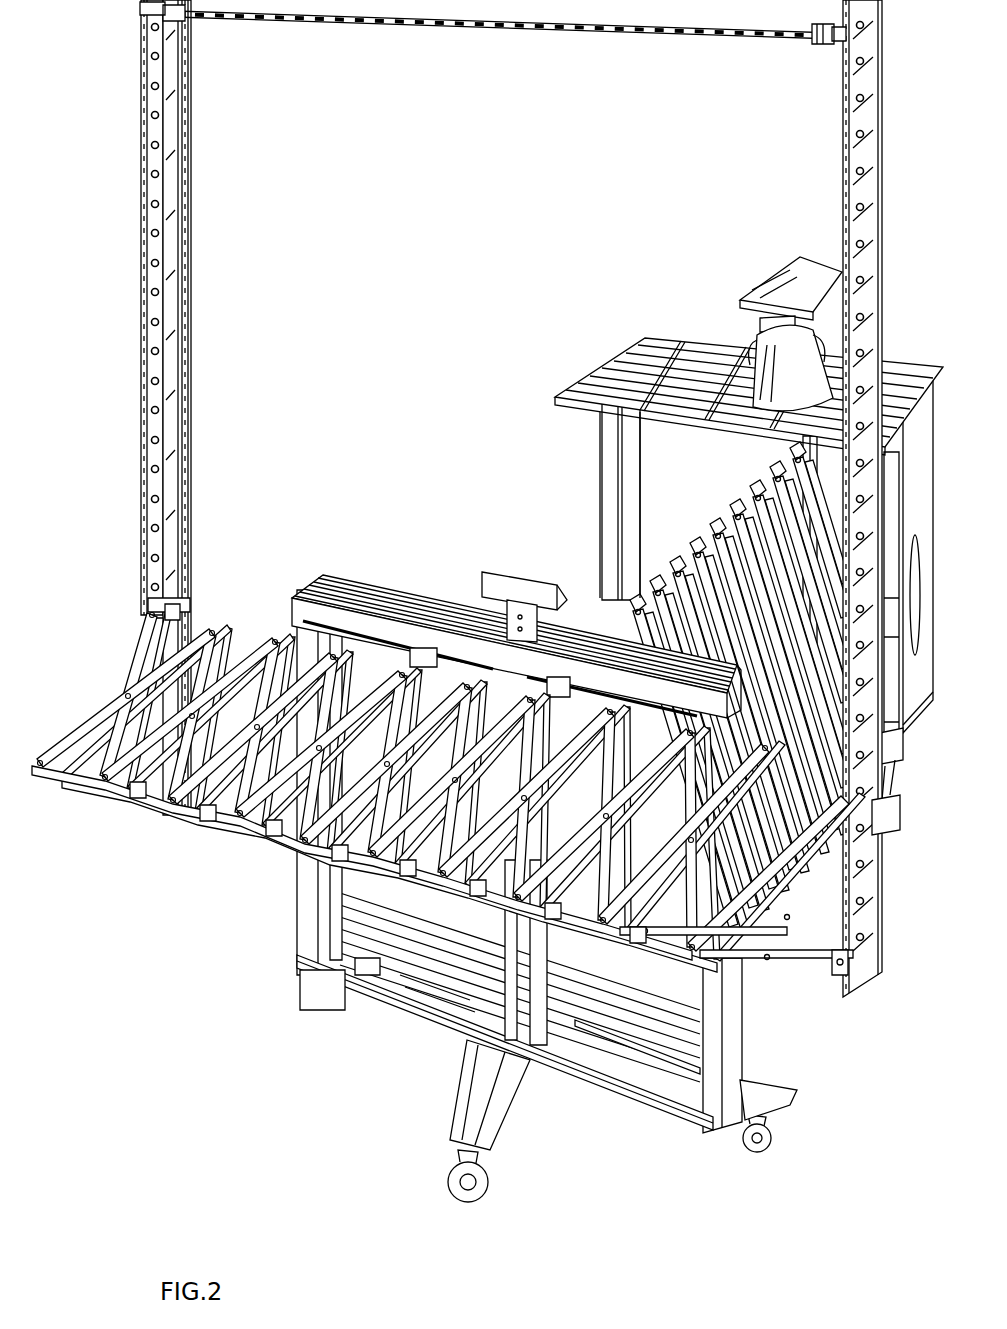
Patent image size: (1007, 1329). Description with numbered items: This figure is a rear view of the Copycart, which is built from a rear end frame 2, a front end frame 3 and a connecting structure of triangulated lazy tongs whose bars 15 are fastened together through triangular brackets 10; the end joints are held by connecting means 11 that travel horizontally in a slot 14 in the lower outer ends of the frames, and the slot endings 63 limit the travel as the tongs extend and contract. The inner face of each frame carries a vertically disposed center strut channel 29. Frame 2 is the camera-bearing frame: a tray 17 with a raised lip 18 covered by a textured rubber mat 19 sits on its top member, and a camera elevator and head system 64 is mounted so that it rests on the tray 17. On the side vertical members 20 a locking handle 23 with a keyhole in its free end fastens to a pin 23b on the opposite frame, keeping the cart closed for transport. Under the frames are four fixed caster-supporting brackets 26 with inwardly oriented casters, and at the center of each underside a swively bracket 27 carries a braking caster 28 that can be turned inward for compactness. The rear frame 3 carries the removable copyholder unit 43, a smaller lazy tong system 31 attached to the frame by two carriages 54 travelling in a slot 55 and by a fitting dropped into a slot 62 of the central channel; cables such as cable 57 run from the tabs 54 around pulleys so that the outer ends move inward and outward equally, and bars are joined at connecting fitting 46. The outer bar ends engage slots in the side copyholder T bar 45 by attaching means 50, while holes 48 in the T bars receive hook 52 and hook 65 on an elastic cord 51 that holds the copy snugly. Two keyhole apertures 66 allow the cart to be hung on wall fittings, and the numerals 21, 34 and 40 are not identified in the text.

The rear end frame 2 is at (600, 497).
The front end frame 3 is at (740, 1020).
The brackets 10 is at (400, 900).
The connecting means 11 is at (363, 977).
The slot 14 is at (400, 985).
The bars 15 is at (665, 540).
The tray 17 is at (600, 380).
The raised edge or lip 18 is at (645, 345).
The textured rubber mat 19 is at (690, 372).
The side vertical members 20 is at (912, 380).
The front leg 21 is at (600, 450).
The locking handle 23 is at (895, 760).
The pin 23b is at (800, 965).
The caster-supporting fixed brackets 26 is at (330, 1010).
The swively bracket 27 is at (467, 1080).
The braking caster 28 is at (462, 1195).
The center strut channel 29 is at (520, 1000).
The lazy tong system 31 is at (520, 640).
The mounting bracket 34 is at (518, 578).
The hinge plate 40 is at (180, 600).
The copyholder unit 43 is at (265, 1128).
The side copyholder T bar 45 is at (145, 215).
The connecting fitting 46 is at (300, 600).
The holes 48 is at (162, 142).
The attaching means 50 is at (180, 612).
The elastic cord 51 is at (500, 30).
The hook 52 is at (140, 10).
The carriage (tab) 54 is at (420, 650).
The slot 55 is at (430, 645).
The cable 57 is at (845, 105).
The slot 62 is at (460, 985).
The slot endings 63 is at (330, 600).
The camera elevator and head system 64 is at (775, 282).
The hook 65 is at (835, 45).
The keyhole apertures 66 is at (260, 815).